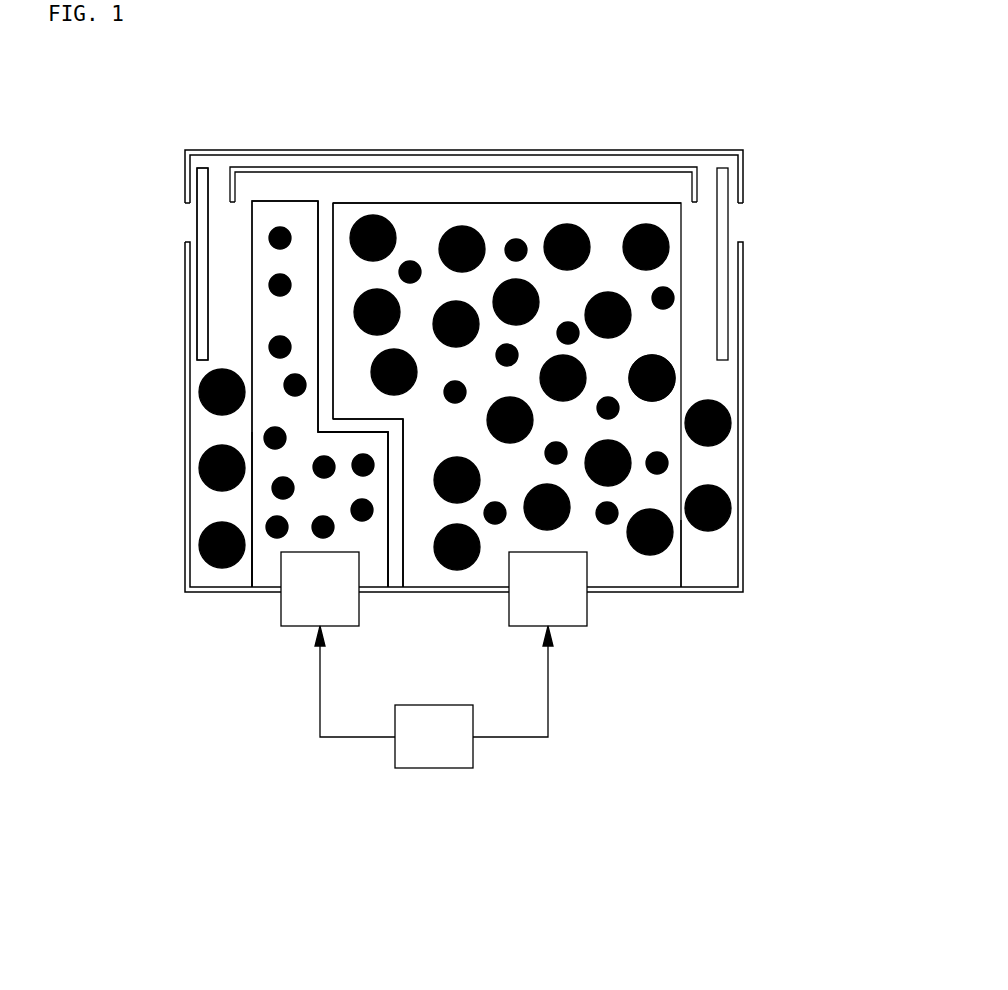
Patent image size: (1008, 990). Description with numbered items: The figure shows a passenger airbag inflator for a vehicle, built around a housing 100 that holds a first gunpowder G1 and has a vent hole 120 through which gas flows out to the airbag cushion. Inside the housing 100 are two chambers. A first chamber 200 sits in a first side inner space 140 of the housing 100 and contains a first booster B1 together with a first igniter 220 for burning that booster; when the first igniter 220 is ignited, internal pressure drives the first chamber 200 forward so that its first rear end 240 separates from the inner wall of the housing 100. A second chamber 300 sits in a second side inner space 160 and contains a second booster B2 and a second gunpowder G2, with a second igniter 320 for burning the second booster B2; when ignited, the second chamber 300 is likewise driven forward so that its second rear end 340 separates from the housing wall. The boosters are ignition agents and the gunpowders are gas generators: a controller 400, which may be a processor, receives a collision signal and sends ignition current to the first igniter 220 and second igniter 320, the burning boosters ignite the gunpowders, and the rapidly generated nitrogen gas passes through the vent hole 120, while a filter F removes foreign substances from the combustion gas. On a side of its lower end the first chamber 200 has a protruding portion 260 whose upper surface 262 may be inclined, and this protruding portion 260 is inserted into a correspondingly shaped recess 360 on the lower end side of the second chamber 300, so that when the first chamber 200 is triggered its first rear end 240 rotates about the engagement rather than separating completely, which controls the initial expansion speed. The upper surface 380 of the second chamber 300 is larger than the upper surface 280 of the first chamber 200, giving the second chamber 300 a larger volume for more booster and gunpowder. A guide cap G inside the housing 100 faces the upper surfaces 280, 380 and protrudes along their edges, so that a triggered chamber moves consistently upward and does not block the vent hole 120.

The housing 100 is at (608, 136).
The vent hole 120 is at (185, 225).
The first side inner space 140 is at (302, 507).
The second side inner space 160 is at (650, 330).
The first chamber 200 is at (280, 322).
The first igniter 220 is at (288, 613).
The first rear end 240 is at (253, 573).
The protruding portion 260 is at (343, 448).
The upper surface of the protruding portion 262 is at (355, 432).
The upper surface of the first chamber 280 is at (285, 202).
The second chamber 300 is at (430, 227).
The second igniter 320 is at (578, 613).
The second rear end 340 is at (679, 553).
The recess 360 is at (415, 450).
The upper surface of the second chamber 380 is at (515, 205).
The controller 400 is at (438, 758).
The guide cap G is at (370, 170).
The first gunpowder G1 is at (199, 392).
The second gunpowder G2 is at (643, 223).
The first booster B1 is at (270, 285).
The second booster B2 is at (675, 298).
The filter F is at (203, 265).